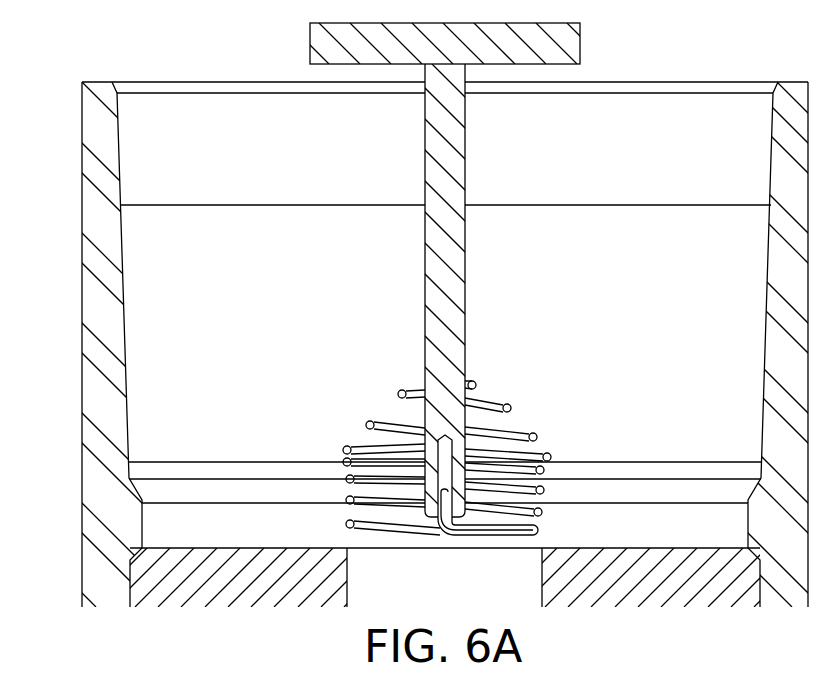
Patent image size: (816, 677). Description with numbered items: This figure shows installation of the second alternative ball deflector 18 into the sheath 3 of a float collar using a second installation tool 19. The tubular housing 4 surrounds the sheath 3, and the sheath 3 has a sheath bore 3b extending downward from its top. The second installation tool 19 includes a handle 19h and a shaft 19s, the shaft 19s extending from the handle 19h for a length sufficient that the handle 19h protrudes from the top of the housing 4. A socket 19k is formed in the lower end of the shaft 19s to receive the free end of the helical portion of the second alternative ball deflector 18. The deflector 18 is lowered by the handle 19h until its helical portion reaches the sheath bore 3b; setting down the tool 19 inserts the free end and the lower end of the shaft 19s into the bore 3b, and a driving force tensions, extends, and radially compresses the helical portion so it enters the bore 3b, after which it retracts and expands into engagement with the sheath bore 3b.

The housing 4 is at (82, 454).
The sheath 3 is at (257, 562).
The sheath bore 3b is at (542, 592).
The second installation tool 19 is at (408, 270).
The handle 19h is at (310, 41).
The shaft 19s is at (425, 272).
The socket 19k is at (420, 442).
The second alternative ball deflector 18 is at (544, 436).